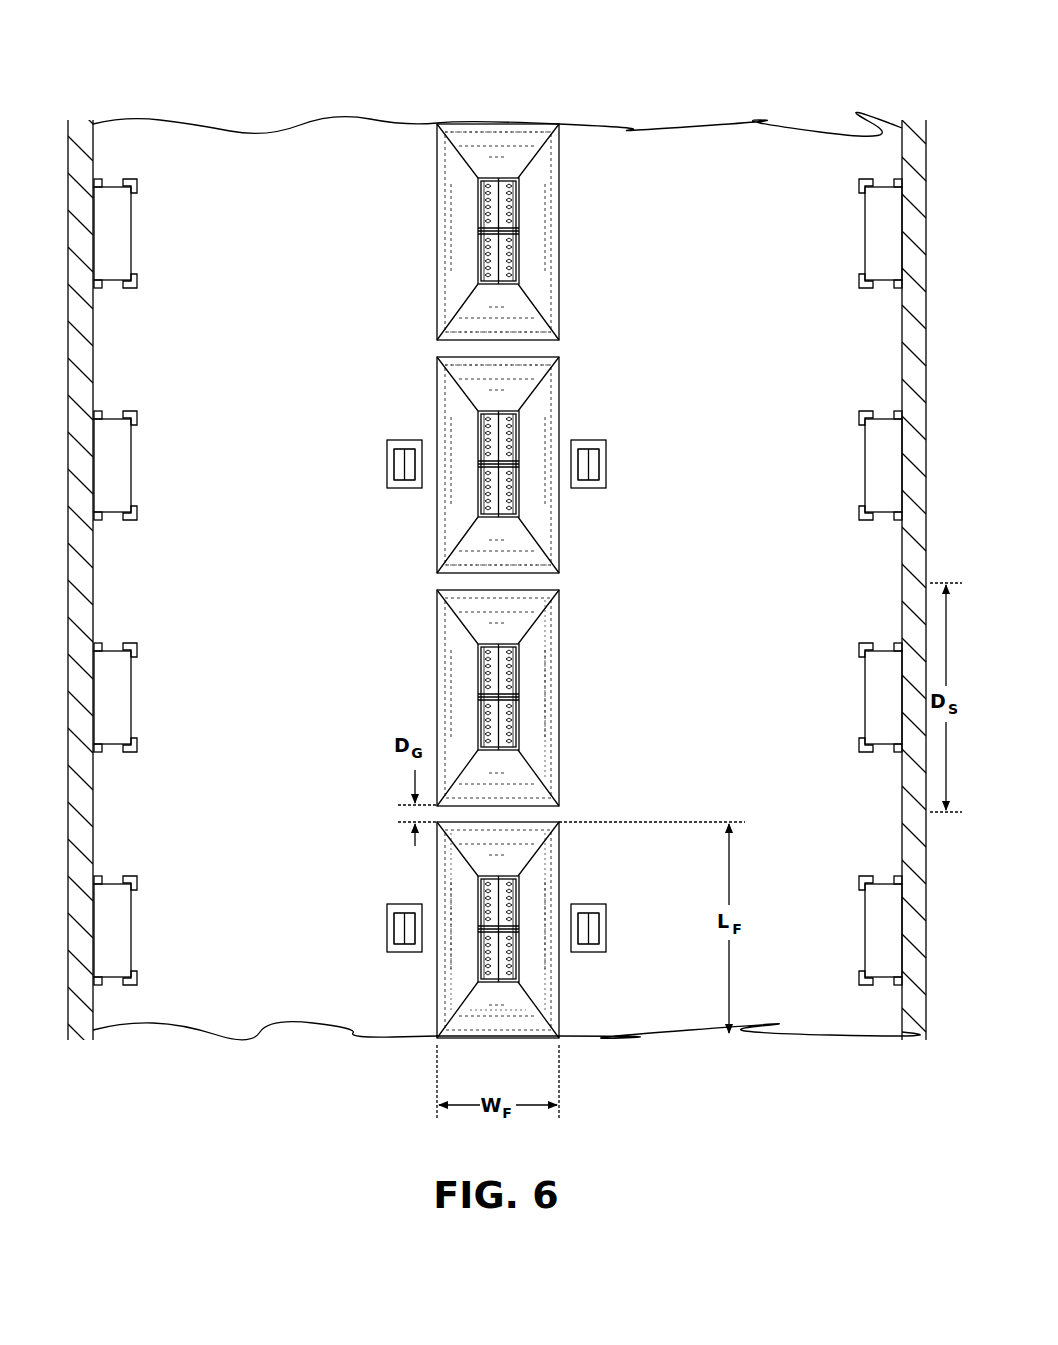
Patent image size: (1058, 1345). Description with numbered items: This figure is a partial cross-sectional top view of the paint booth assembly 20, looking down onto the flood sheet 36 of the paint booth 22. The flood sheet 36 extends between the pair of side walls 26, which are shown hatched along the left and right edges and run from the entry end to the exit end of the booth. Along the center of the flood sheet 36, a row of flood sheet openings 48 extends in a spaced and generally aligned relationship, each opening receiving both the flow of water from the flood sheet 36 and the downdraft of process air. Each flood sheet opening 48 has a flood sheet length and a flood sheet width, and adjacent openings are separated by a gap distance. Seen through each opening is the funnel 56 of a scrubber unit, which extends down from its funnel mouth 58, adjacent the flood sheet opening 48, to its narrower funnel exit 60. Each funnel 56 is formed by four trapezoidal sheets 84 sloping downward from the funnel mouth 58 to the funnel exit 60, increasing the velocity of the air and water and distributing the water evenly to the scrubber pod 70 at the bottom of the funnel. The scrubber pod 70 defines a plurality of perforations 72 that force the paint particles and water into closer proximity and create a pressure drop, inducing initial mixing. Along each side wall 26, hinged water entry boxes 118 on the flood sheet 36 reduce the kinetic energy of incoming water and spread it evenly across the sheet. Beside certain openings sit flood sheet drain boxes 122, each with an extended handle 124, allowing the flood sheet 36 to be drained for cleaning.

The paint booth assembly 20 is at (787, 66).
The paint booth 22 is at (64, 660).
The side walls 26 is at (80, 778).
The flood sheet 36 is at (262, 1002).
The flood sheet openings 48 is at (552, 153).
The funnel 56 is at (540, 525).
The funnel mouth 58 is at (455, 990).
The funnel exit 60 is at (492, 984).
The scrubber pod 70 is at (512, 420).
The perforations 72 is at (517, 197).
The trapezoidal sheets 84 is at (458, 200).
The water entry boxes 118 is at (115, 237).
The flood sheet drain box 122 is at (603, 440).
The extended handle 124 is at (590, 448).